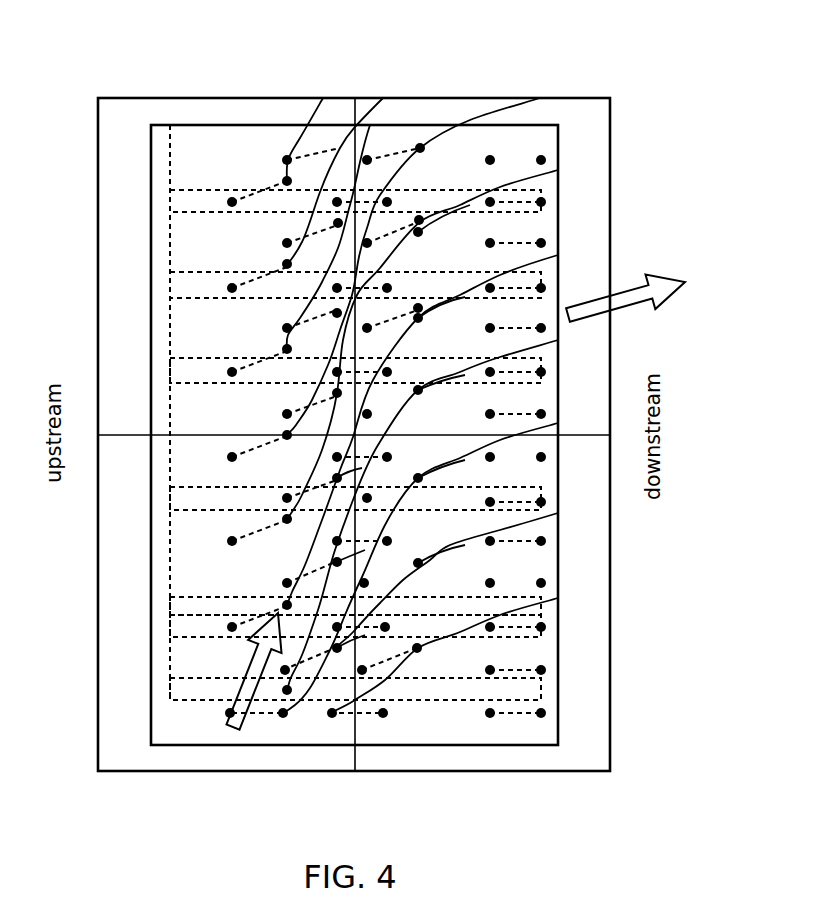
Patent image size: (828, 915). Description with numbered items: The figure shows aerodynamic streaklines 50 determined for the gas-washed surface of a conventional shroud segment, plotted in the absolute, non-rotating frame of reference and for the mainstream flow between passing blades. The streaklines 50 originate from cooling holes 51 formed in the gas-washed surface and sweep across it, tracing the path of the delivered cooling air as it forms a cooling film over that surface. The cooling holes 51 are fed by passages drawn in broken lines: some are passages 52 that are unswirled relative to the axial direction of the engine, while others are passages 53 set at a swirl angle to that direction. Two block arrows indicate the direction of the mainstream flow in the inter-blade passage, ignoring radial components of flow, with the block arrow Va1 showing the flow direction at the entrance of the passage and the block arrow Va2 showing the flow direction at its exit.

The aerodynamic streaklines 50 is at (313, 115).
The cooling holes 51 is at (287, 180).
The passages 52 is at (492, 717).
The passages 53 is at (262, 192).
The block arrow Va1 is at (233, 692).
The block arrow Va2 is at (638, 280).